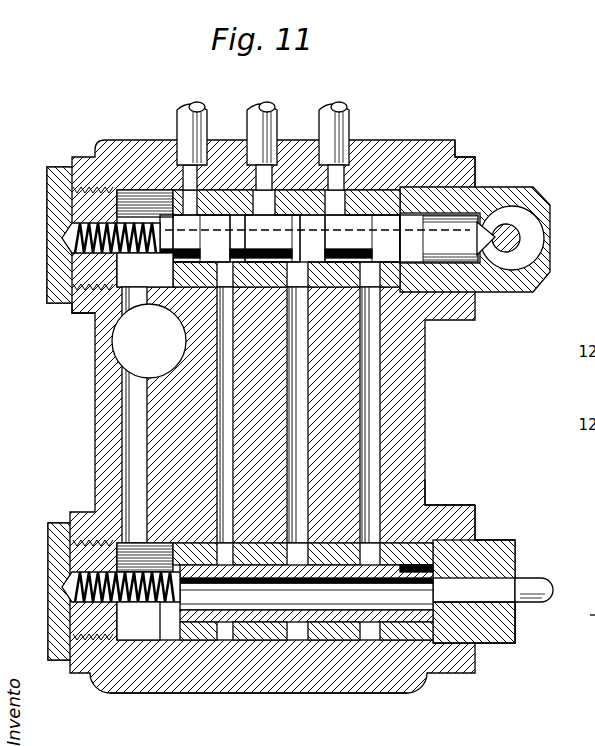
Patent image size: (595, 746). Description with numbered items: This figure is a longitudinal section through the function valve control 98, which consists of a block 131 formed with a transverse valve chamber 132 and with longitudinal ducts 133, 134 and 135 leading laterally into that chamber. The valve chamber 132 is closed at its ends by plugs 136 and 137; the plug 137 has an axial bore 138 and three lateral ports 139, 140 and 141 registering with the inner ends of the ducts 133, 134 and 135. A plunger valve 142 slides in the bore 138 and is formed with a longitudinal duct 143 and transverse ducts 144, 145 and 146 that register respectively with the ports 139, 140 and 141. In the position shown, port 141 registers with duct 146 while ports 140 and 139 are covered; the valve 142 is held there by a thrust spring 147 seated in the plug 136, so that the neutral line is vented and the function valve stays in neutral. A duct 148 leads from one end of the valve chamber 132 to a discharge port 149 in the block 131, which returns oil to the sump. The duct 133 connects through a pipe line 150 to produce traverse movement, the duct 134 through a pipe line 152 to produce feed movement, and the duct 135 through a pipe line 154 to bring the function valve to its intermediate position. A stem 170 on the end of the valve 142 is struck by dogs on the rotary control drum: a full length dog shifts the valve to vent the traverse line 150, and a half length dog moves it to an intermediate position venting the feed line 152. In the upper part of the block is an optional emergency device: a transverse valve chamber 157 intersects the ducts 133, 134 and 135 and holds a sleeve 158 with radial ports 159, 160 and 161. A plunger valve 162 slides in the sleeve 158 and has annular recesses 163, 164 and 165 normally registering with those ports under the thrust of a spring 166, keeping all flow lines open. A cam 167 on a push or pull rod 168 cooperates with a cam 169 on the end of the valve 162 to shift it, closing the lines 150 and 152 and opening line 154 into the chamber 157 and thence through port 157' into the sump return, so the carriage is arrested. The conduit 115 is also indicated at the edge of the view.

The function valve control 98 is at (181, 134).
The conduit 115 is at (594, 630).
The block 131 is at (410, 400).
The transverse valve chamber 132 is at (172, 628).
The longitudinal duct 133 is at (335, 175).
The longitudinal duct 134 is at (263, 175).
The longitudinal duct 135 is at (193, 175).
The plug 136 is at (58, 525).
The plug 137 is at (490, 545).
The axial bore 138 is at (430, 615).
The lateral port 139 is at (425, 500).
The lateral port 140 is at (305, 550).
The lateral port 141 is at (215, 543).
The plunger valve 142 is at (340, 617).
The longitudinal duct 143 is at (262, 595).
The transverse duct 144 is at (450, 520).
The transverse duct 145 is at (320, 560).
The transverse duct 146 is at (243, 565).
The thrust spring 147 is at (121, 606).
The duct 148 is at (135, 418).
The discharge port 149 is at (130, 345).
The pipe line 150 is at (342, 108).
The pipe line 152 is at (268, 105).
The pipe line 154 is at (200, 110).
The transverse valve chamber 157 is at (145, 167).
The port 157' is at (70, 321).
The sleeve 158 is at (445, 192).
The radial port 159 is at (332, 208).
The radial port 160 is at (262, 205).
The radial port 161 is at (195, 212).
The plunger valve 162 is at (400, 210).
The annular recess 163 is at (334, 284).
The annular recess 164 is at (260, 284).
The annular recess 165 is at (207, 283).
The spring 166 is at (111, 252).
The cam 167 is at (527, 232).
The push or pull rod 168 is at (527, 245).
The cam 169 is at (482, 225).
The stem 170 is at (535, 580).